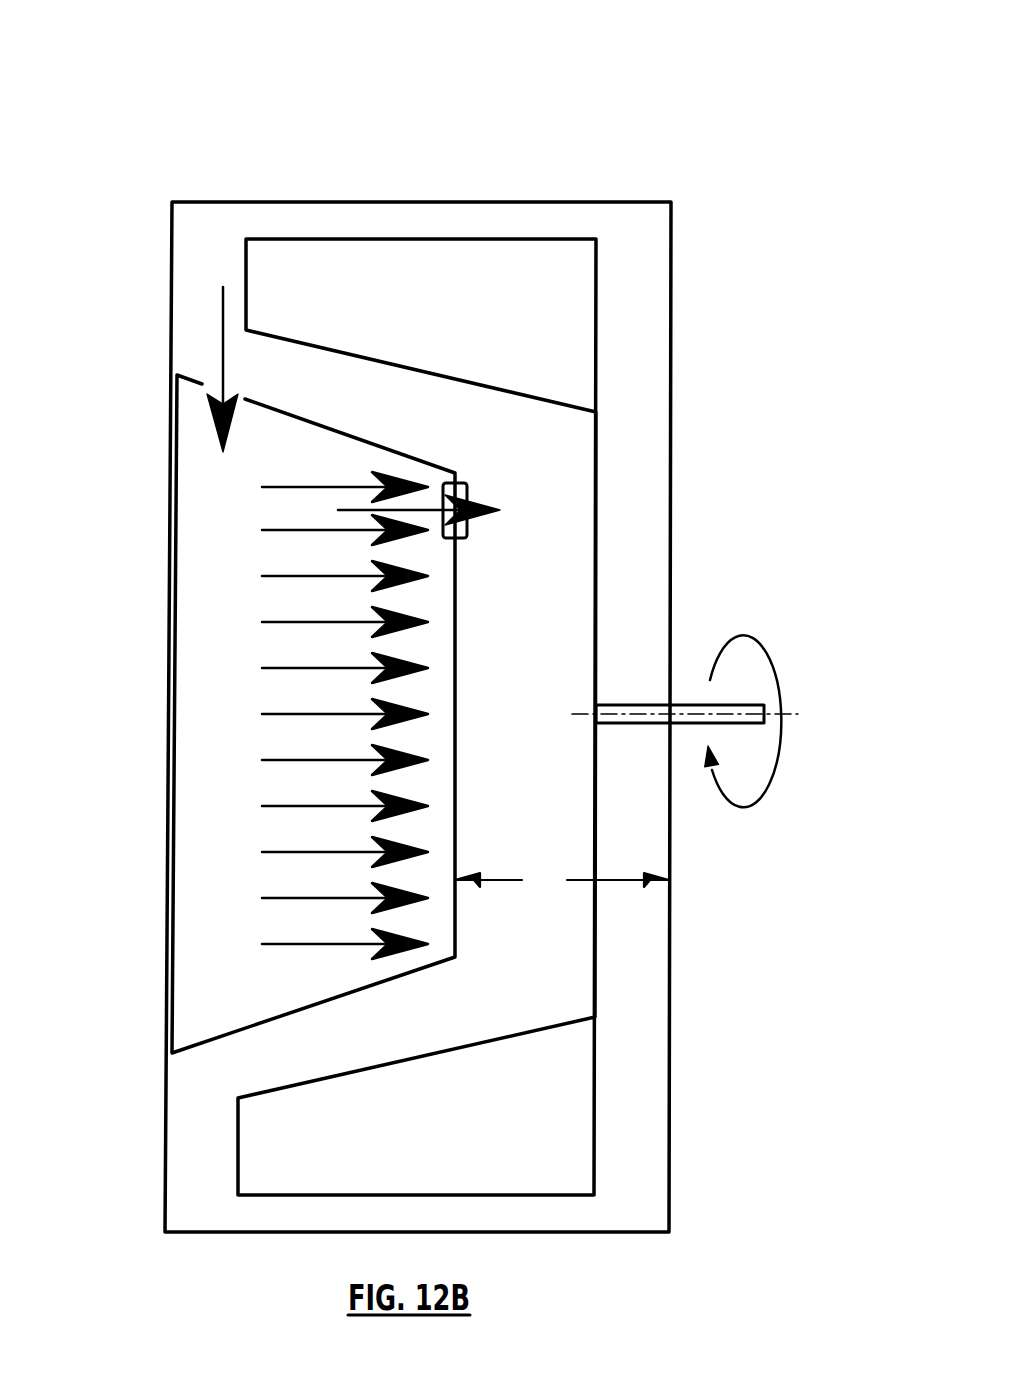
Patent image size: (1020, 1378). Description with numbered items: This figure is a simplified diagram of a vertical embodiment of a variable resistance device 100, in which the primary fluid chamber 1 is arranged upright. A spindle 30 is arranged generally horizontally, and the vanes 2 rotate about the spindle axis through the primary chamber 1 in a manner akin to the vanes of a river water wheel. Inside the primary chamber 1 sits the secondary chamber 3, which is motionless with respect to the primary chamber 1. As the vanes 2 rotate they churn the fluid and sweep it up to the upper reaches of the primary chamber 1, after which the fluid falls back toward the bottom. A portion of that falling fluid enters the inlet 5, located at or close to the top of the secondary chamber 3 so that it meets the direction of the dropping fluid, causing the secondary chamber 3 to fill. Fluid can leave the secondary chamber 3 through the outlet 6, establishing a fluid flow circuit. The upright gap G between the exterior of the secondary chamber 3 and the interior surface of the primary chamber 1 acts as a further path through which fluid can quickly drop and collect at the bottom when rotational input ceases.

The film forming apparatus 100 is at (132, 125).
The primary fluid chamber 1 is at (330, 195).
The vanes 2 is at (489, 280).
The secondary chamber 3 is at (463, 643).
The inlet 5 is at (210, 382).
The outlet 6 is at (476, 543).
The spindle 30 is at (692, 702).
The upright gap G is at (562, 882).